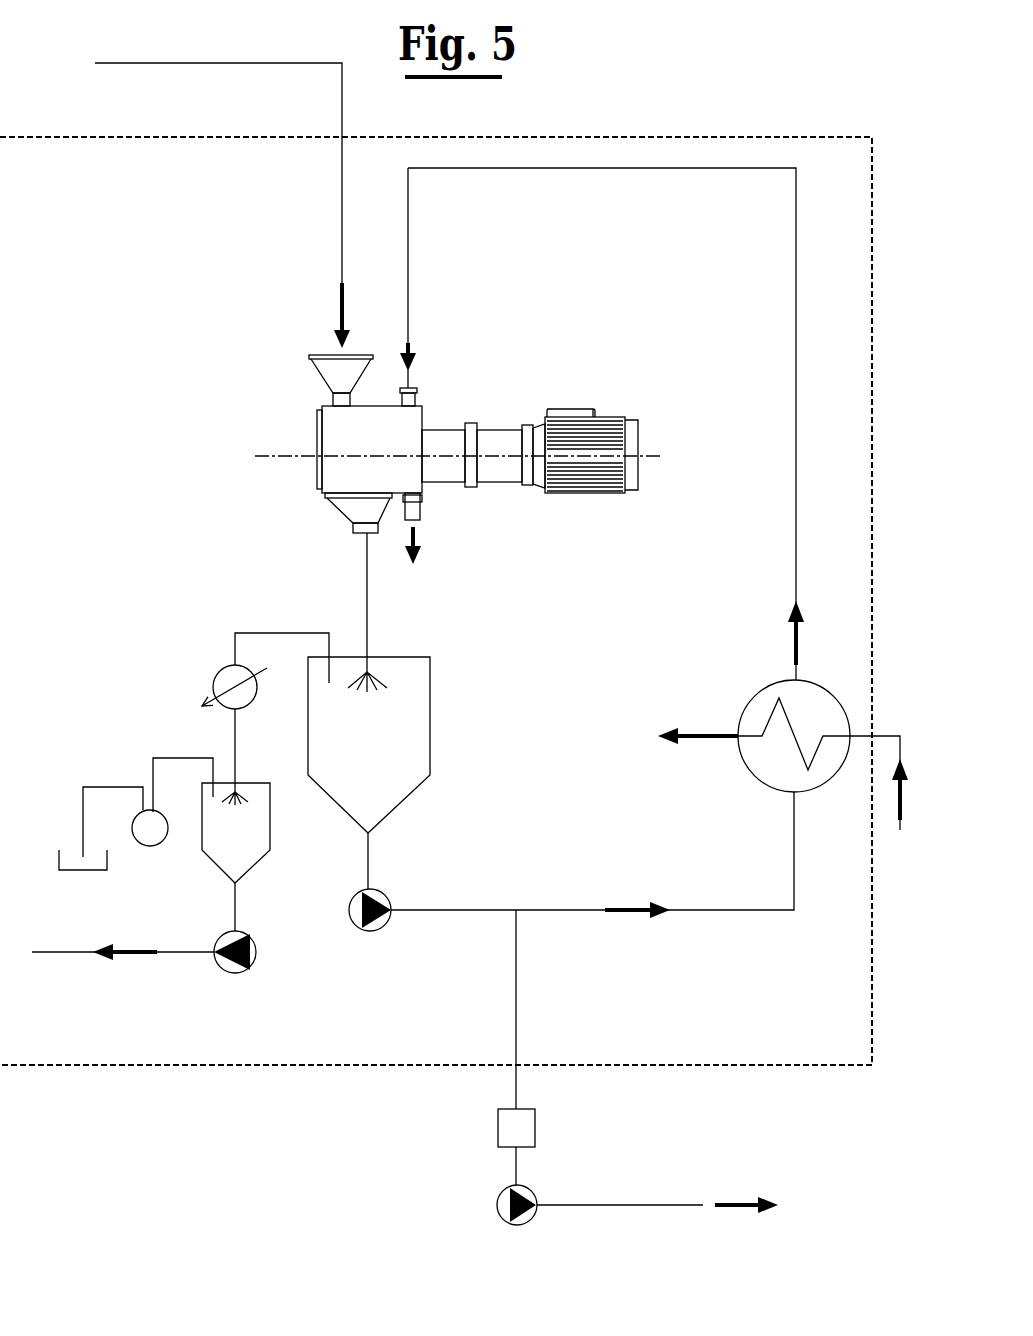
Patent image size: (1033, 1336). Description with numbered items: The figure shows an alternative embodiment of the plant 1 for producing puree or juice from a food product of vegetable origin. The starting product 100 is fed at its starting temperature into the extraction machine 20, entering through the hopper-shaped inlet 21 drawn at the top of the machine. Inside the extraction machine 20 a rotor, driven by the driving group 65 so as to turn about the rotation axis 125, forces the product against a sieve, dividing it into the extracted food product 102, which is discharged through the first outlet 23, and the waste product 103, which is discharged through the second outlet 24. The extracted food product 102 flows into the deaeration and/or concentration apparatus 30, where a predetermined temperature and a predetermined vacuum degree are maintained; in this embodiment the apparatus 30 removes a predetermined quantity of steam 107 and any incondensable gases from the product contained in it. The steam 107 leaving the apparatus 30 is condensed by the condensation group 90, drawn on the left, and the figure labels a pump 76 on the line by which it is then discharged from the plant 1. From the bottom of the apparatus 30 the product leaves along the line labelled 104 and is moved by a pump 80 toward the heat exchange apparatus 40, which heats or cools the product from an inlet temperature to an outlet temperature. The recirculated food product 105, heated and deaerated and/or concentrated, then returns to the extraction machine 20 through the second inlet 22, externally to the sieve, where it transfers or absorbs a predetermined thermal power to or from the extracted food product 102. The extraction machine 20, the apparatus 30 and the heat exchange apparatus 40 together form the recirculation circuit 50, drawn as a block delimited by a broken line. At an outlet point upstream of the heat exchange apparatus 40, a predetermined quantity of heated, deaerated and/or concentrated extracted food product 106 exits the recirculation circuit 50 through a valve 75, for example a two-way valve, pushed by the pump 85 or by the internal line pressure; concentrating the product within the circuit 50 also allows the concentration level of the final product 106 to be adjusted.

The plant 1 is at (822, 1110).
The extraction machine 20 is at (385, 465).
The feed hopper 21 is at (310, 377).
The second inlet 22 is at (428, 397).
The first outlet 23 is at (340, 520).
The second outlet 24 is at (425, 512).
The deaeration and/or concentration apparatus 30 is at (437, 728).
The heat exchange apparatus 40 is at (740, 695).
The recirculation circuit 50 is at (685, 158).
The driving group 65 is at (643, 408).
The valve 75 is at (552, 1123).
The pump 76 is at (247, 978).
The pump 80 is at (358, 937).
The pump 85 is at (488, 1222).
The condensation group 90 is at (160, 698).
The product 100 is at (238, 58).
The extracted food product 102 is at (370, 627).
The waste product 103 is at (425, 537).
The tank outlet stream 104 is at (370, 867).
The recirculated food product 105 is at (410, 287).
The heated deaerated and/or concentrated extracted food product 106 is at (605, 1213).
The steam 107 is at (75, 965).
The rotation axis 125 is at (288, 455).